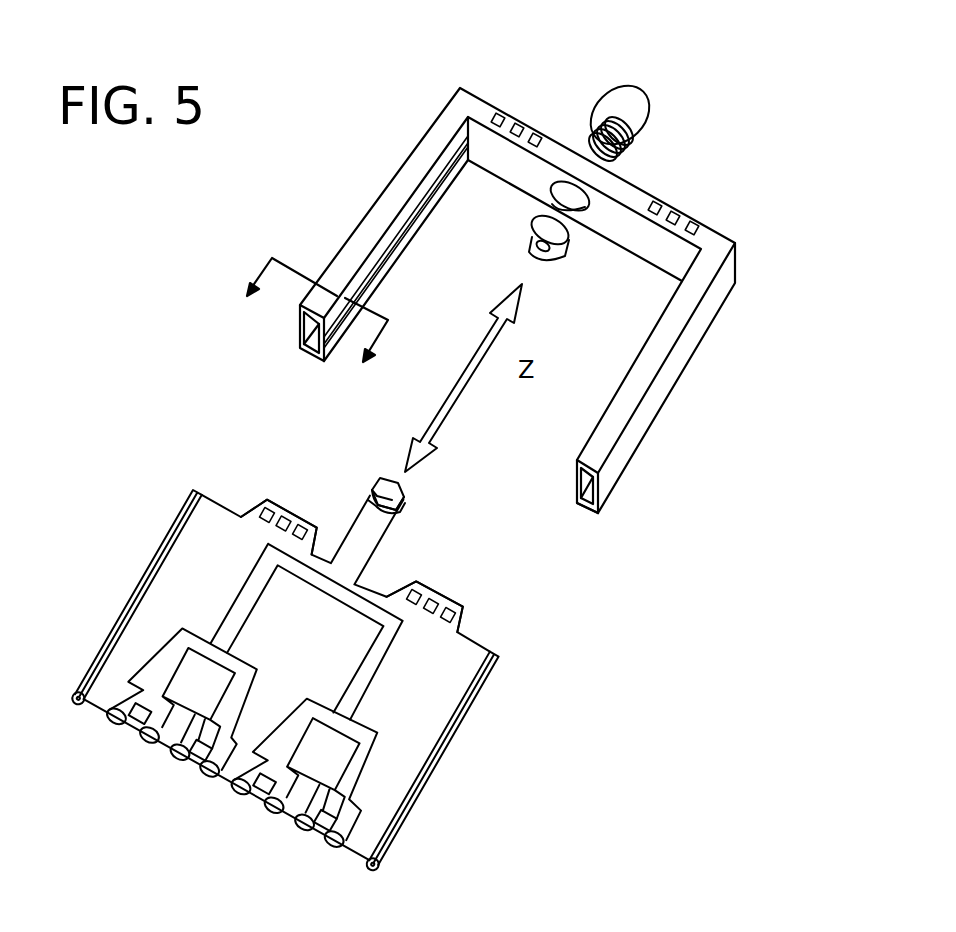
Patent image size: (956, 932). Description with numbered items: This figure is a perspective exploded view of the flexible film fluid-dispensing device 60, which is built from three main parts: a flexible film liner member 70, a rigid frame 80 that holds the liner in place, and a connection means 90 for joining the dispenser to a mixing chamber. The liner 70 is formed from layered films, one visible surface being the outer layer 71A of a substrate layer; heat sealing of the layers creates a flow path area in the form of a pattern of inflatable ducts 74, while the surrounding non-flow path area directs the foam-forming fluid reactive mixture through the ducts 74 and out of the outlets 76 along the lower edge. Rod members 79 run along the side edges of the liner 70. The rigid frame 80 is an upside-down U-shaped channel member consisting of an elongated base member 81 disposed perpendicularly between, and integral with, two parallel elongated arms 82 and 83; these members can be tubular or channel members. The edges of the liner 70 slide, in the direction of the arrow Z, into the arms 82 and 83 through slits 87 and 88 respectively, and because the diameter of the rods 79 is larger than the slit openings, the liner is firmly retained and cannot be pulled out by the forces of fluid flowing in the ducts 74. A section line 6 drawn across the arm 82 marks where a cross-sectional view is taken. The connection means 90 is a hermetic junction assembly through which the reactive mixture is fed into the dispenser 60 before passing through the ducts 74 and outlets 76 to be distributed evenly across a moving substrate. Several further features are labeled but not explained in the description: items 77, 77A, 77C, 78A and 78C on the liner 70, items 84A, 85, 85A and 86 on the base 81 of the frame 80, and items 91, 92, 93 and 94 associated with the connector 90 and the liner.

The section line of FIG. 6 is at (311, 314).
The flexible film fluid-dispensing device 60 is at (404, 102).
The flexible film liner member 70 is at (486, 633).
The outer layer 71A is at (210, 542).
The inflatable ducts 74 is at (242, 602).
The outlets 76 is at (182, 760).
The board side edge 77 is at (456, 740).
The guide tab 77A is at (262, 500).
The tab apertures 77C is at (292, 514).
The guide tab 78A is at (462, 622).
The tab apertures 78C is at (432, 590).
The rod members 79 is at (113, 633).
The rigid frame 80 is at (772, 252).
The elongated base member 81 is at (484, 102).
The elongated arm 82 is at (392, 178).
The elongated arm 83 is at (668, 390).
The frame apertures 84A is at (514, 114).
The grommet 85 is at (530, 247).
The frame apertures 85A is at (700, 226).
The frame opening 86 is at (552, 190).
The slit 87 is at (385, 263).
The slit 88 is at (575, 512).
The connection means 90 is at (614, 83).
The mounting post 91 is at (373, 482).
The screw 92 is at (632, 96).
The screw threads 93 is at (590, 132).
The threaded aperture 94 is at (578, 250).